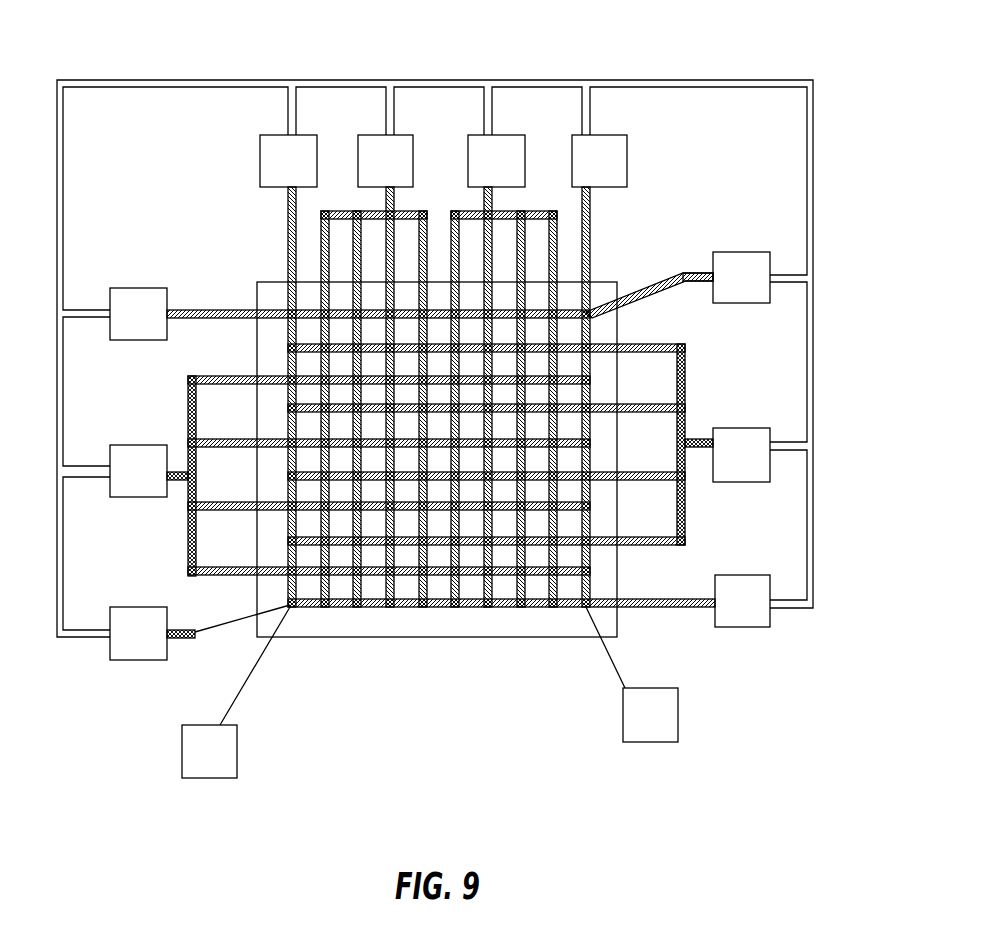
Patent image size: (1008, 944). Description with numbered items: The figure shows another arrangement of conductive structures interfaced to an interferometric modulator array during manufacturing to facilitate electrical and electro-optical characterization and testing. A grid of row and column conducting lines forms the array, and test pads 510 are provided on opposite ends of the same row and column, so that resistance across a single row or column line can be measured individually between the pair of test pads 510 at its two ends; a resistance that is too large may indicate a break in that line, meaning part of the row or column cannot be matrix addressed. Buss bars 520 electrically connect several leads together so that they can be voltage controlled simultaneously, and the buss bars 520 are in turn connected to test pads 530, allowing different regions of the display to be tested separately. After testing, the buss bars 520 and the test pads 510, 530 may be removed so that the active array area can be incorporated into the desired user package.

The test pads 510 is at (260, 146).
The buss bars 520 is at (322, 211).
The test pads 530 is at (483, 135).